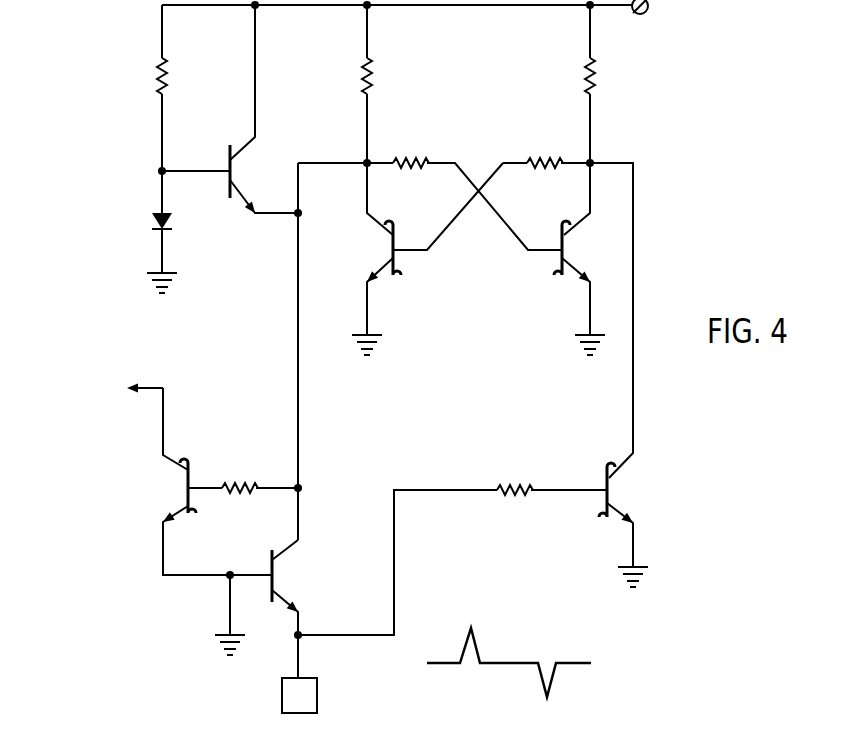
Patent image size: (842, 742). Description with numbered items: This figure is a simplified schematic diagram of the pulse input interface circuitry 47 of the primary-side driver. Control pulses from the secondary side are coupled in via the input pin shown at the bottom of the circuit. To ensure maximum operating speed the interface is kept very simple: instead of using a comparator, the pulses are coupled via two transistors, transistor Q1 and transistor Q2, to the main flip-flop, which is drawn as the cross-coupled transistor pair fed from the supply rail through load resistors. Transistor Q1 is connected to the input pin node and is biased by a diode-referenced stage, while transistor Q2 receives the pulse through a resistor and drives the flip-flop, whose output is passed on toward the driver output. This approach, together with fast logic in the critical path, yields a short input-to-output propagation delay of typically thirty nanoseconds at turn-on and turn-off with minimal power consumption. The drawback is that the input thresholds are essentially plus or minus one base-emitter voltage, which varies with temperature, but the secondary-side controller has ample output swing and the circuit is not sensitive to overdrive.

The pulse input interface circuitry 47 is at (95, 150).
The transistor Q1 is at (292, 609).
The transistor Q2 is at (623, 525).